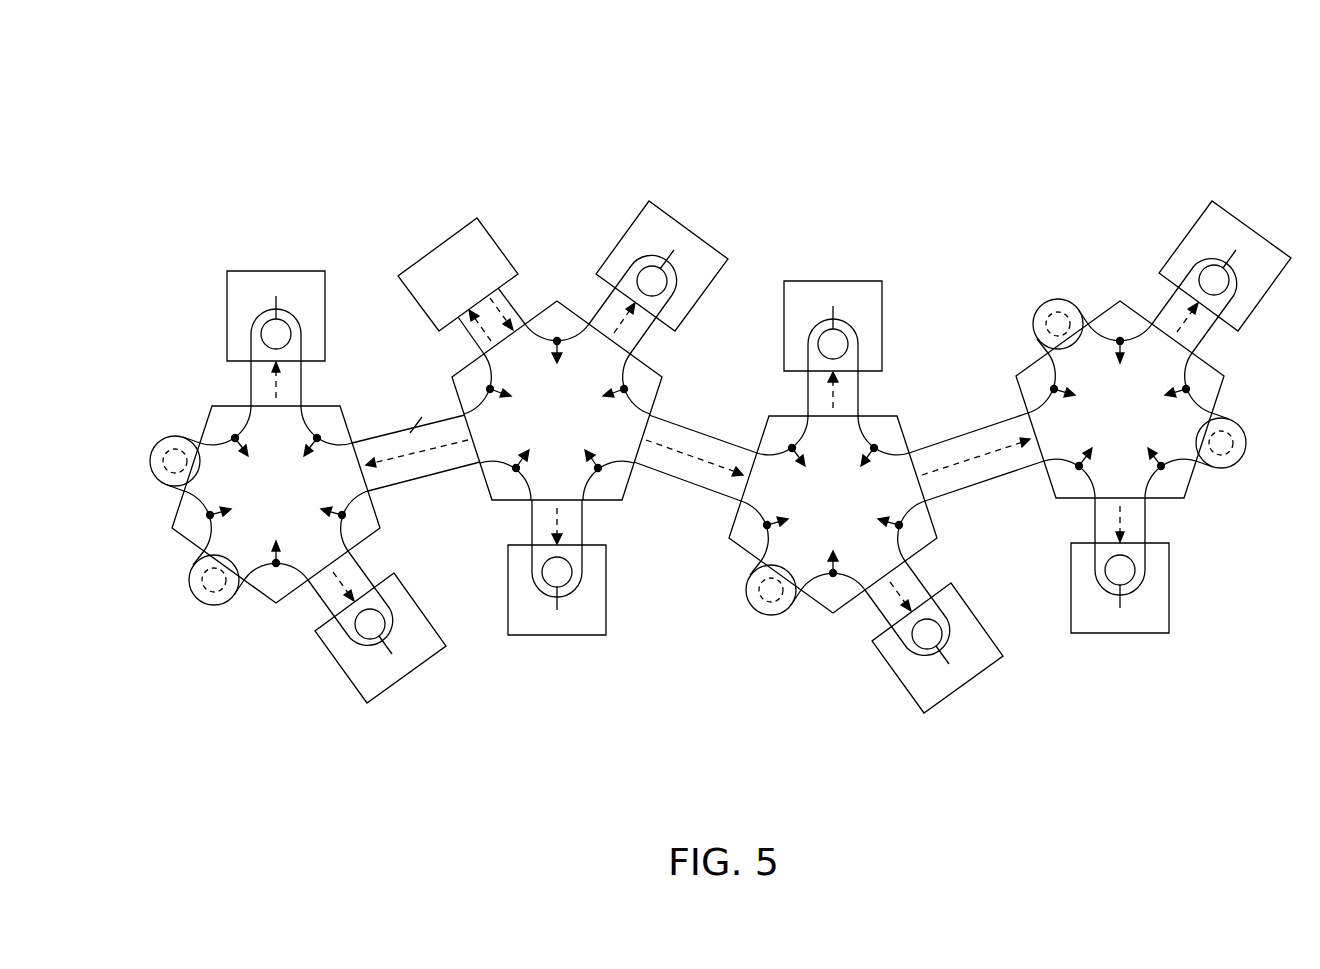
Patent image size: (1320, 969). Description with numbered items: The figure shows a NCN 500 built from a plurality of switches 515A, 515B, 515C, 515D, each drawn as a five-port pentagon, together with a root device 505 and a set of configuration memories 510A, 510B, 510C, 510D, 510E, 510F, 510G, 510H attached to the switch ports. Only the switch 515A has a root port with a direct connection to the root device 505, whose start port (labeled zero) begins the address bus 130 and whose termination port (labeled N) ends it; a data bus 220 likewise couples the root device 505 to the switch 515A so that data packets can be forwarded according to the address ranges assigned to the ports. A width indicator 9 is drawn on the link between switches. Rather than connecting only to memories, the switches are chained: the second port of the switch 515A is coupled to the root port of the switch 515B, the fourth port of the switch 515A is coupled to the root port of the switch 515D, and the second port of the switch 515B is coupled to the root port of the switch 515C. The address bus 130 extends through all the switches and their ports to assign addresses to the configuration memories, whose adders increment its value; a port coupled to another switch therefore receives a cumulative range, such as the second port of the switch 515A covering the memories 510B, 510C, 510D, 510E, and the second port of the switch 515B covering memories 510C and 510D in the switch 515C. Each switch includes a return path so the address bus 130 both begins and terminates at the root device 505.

The NCN 500 is at (1120, 150).
The root device 505 is at (432, 252).
The address bus 130 is at (517, 312).
The data bus 220 is at (462, 338).
The link width indicator 9 is at (409, 417).
The configuration memory 510A is at (663, 208).
The configuration memory 510B is at (853, 281).
The configuration memory 510C is at (1232, 218).
The configuration memory 510D is at (1170, 597).
The configuration memory 510E is at (990, 677).
The configuration memory 510F is at (608, 593).
The configuration memory 510G is at (433, 665).
The configuration memory 510H is at (243, 271).
The switch 515A is at (646, 367).
The switch 515B is at (737, 513).
The switch 515C is at (1190, 484).
The switch 515D is at (258, 590).